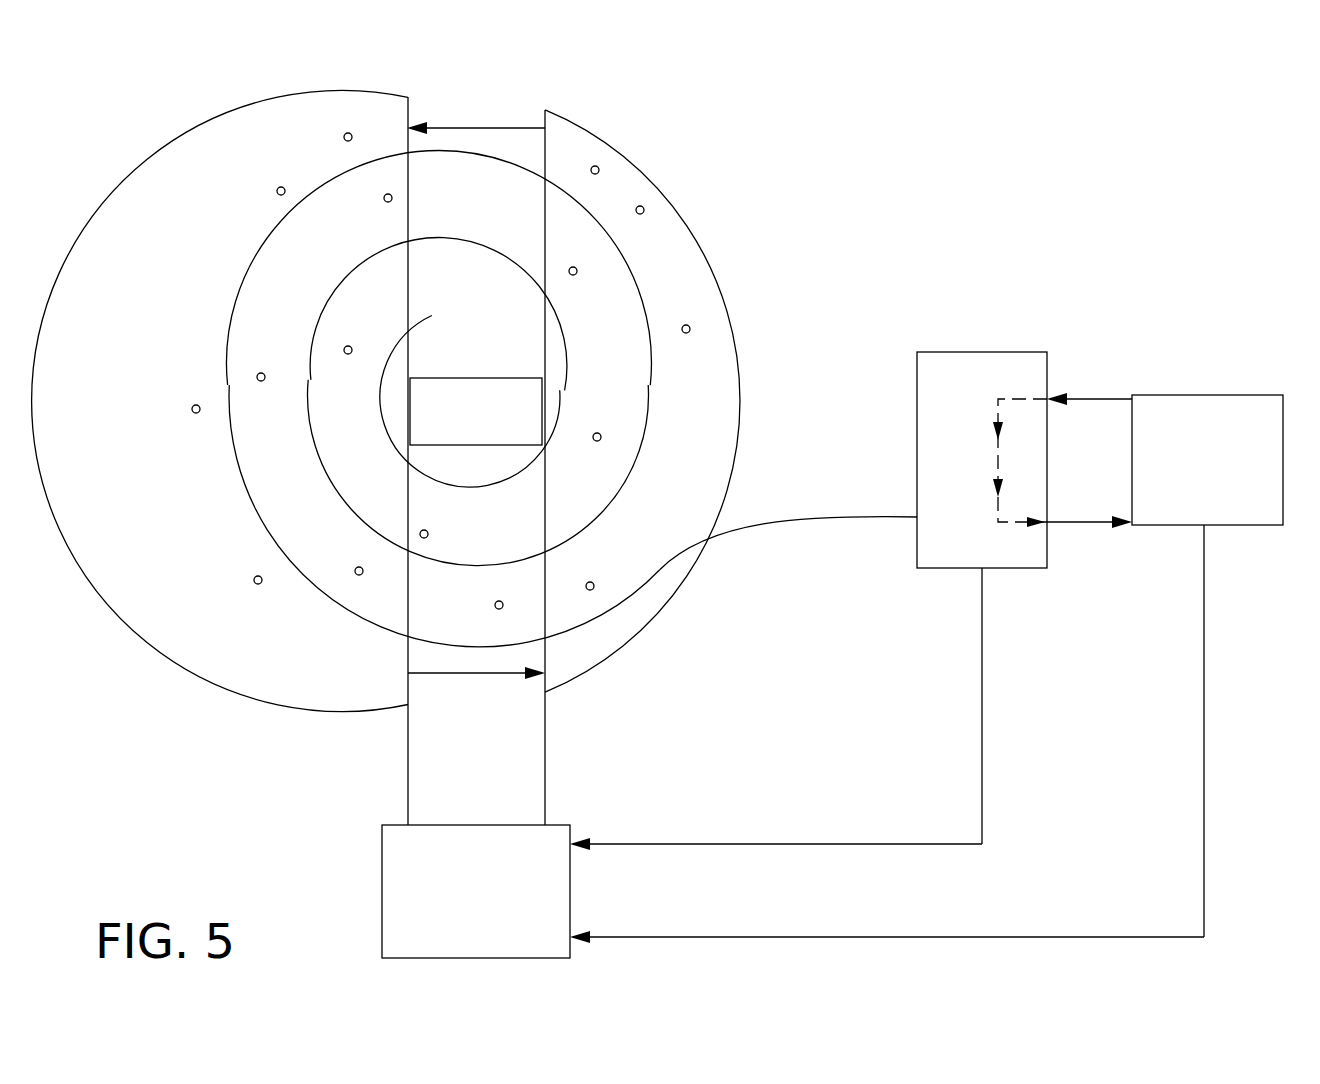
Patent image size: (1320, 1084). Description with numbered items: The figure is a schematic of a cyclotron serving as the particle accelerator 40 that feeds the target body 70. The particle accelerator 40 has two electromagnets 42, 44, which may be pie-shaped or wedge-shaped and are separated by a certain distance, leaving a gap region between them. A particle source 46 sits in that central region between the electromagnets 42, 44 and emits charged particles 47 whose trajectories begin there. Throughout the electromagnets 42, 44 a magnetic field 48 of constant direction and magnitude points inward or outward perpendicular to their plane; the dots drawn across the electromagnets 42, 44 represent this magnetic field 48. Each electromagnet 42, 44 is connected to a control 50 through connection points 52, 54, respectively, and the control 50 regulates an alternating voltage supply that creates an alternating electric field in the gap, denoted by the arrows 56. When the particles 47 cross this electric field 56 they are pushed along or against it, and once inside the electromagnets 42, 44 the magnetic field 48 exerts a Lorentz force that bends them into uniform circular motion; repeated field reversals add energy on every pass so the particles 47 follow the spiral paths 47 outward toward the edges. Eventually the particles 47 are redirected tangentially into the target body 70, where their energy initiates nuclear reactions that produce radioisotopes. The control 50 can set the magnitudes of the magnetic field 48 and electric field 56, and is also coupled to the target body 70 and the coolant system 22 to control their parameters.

The particle accelerator 40 is at (228, 91).
The electromagnet 42 is at (408, 97).
The electromagnet 44 is at (560, 112).
The particle source 46 is at (503, 378).
The charged particles 47 is at (238, 306).
The magnetic field 48 is at (344, 137).
The control 50 is at (382, 860).
The connection point 52 is at (407, 704).
The connection point 54 is at (546, 693).
The electric field 56 is at (460, 128).
The target body 70 is at (1020, 352).
The coolant system 22 is at (1238, 395).